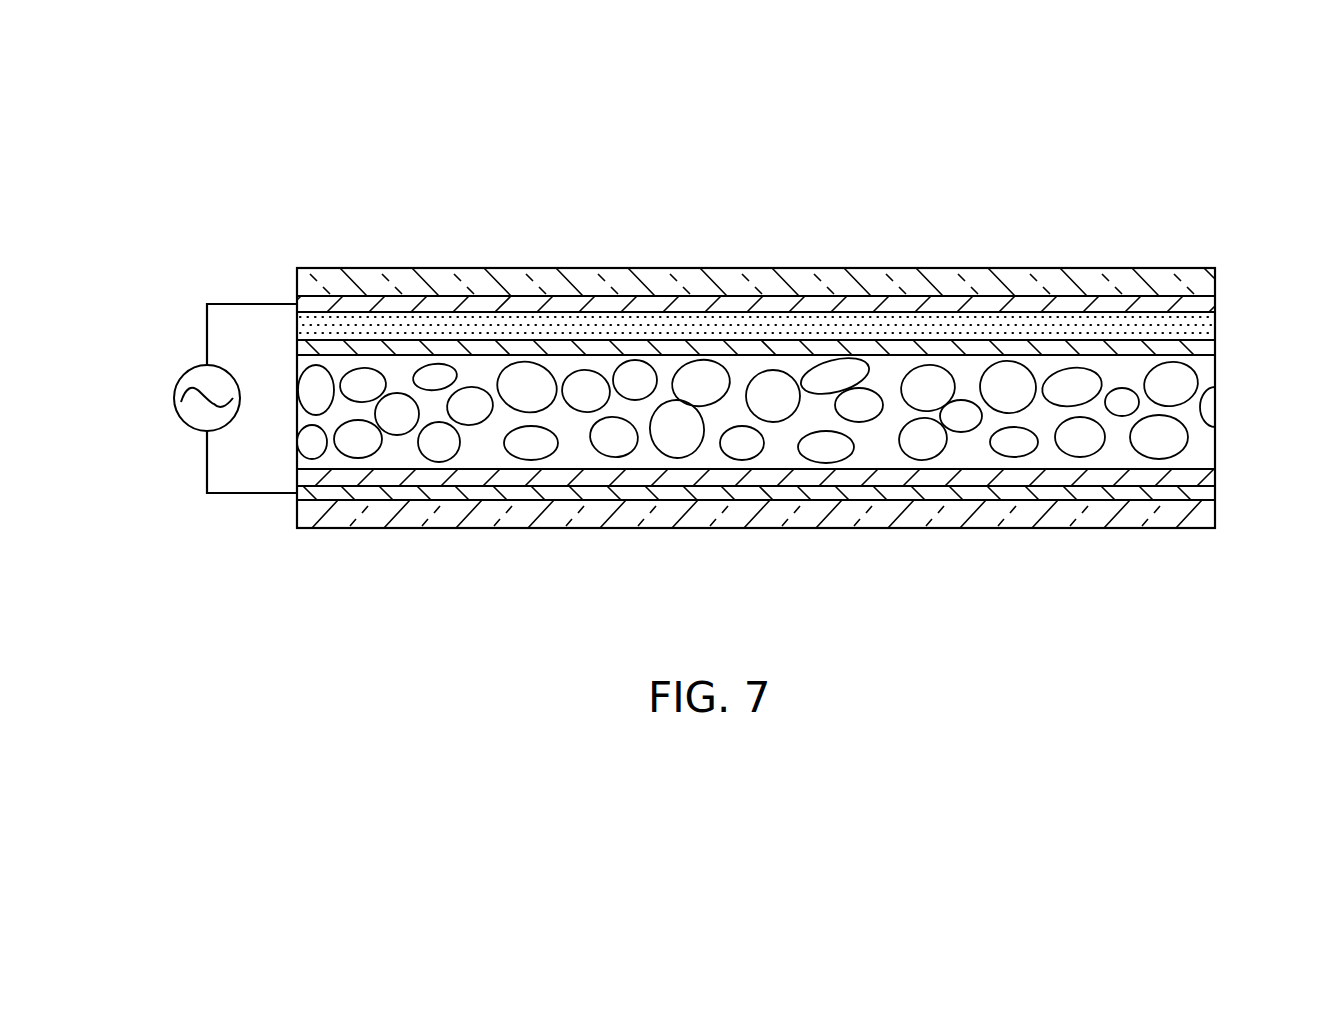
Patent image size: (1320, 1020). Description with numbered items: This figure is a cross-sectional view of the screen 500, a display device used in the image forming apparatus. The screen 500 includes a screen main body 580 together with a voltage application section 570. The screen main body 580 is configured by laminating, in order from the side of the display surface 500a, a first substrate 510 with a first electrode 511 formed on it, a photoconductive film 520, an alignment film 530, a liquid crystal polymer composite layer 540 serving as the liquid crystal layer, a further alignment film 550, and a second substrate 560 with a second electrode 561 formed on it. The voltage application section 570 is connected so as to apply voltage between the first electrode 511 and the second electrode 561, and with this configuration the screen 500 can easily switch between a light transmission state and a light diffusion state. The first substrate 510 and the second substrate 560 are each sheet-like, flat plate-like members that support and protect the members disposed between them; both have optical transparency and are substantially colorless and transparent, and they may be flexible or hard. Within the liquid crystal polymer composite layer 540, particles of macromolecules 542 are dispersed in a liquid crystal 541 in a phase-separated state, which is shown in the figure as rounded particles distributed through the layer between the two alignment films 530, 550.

The screen 500 is at (950, 112).
The display surface 500a is at (818, 268).
The first substrate 510 is at (690, 282).
The first electrode 511 is at (568, 305).
The photoconductive film 520 is at (480, 325).
The alignment film 530 is at (1018, 350).
The liquid crystal polymer composite layer 540 is at (796, 478).
The liquid crystal 541 is at (787, 442).
The particles of macromolecules 542 is at (533, 445).
The alignment film 550 is at (878, 478).
The second substrate 560 is at (582, 510).
The second electrode 561 is at (688, 495).
The voltage application section 570 is at (175, 413).
The screen main body 580 is at (390, 254).